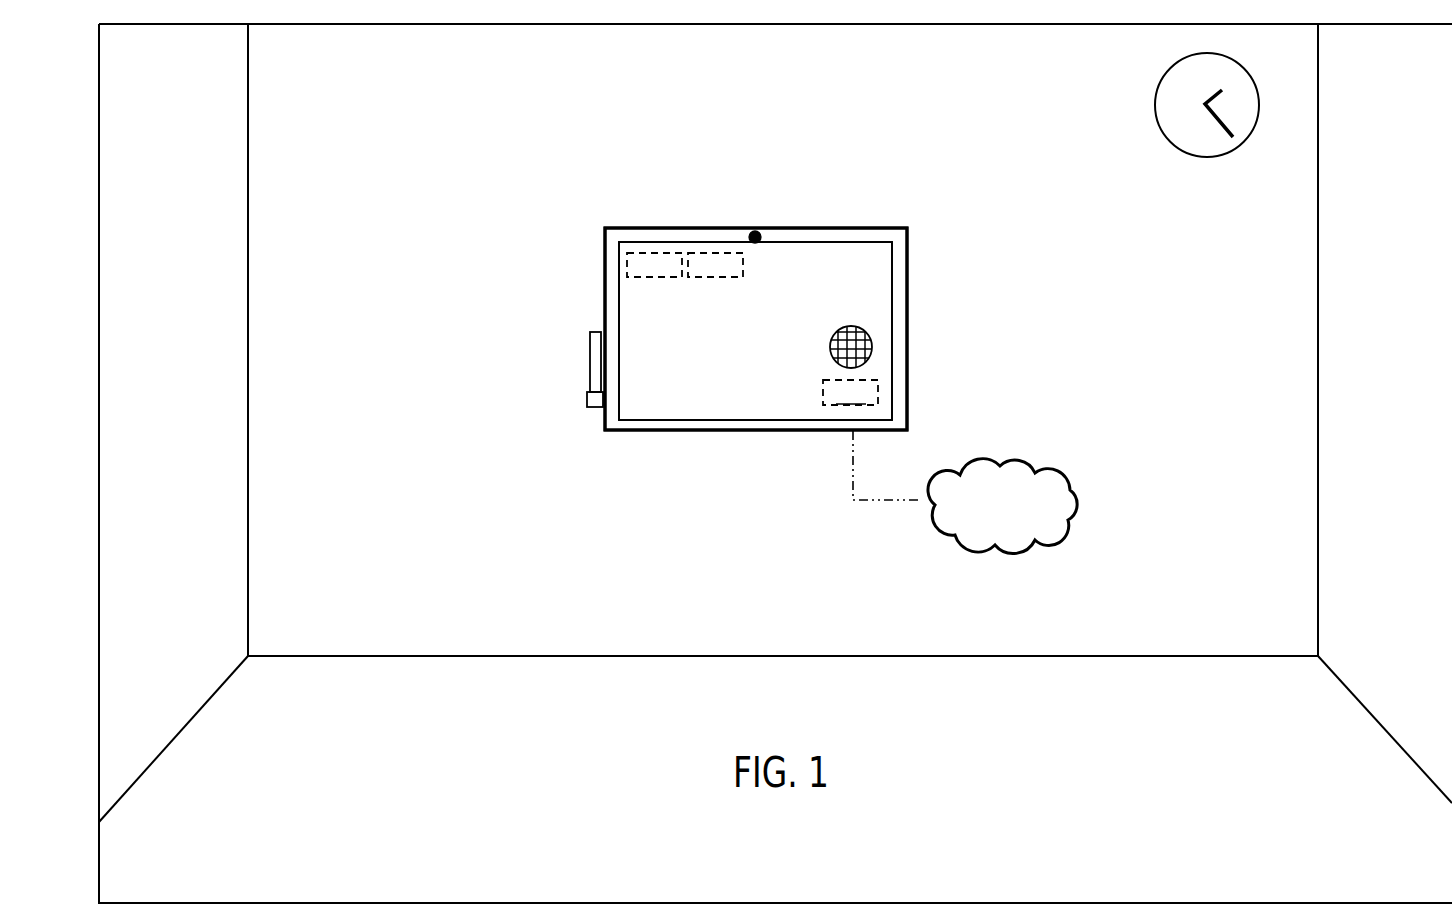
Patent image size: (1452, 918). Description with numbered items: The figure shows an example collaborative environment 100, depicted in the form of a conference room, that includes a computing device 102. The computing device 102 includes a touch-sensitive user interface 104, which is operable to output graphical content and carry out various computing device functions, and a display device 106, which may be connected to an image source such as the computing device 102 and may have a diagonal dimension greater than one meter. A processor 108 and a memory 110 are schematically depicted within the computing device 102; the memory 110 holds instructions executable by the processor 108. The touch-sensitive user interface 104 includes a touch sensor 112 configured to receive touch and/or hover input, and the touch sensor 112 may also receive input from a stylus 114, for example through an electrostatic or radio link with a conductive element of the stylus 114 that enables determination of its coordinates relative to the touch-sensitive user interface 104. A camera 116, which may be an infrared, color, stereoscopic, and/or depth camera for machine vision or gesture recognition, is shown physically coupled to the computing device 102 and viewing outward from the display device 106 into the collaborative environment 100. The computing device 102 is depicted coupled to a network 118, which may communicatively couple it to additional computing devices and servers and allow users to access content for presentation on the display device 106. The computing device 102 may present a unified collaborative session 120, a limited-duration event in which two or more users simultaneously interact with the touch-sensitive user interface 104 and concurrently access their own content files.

The collaborative environment 100 is at (985, 108).
The computing device 102 is at (627, 201).
The touch-sensitive user interface 104 is at (853, 258).
The display device 106 is at (908, 292).
The processor 108 is at (640, 277).
The memory 110 is at (701, 277).
The touch sensor 112 is at (850, 327).
The stylus 114 is at (590, 358).
The camera 116 is at (762, 236).
The network 118 is at (986, 515).
The unified collaborative session 120 is at (737, 342).